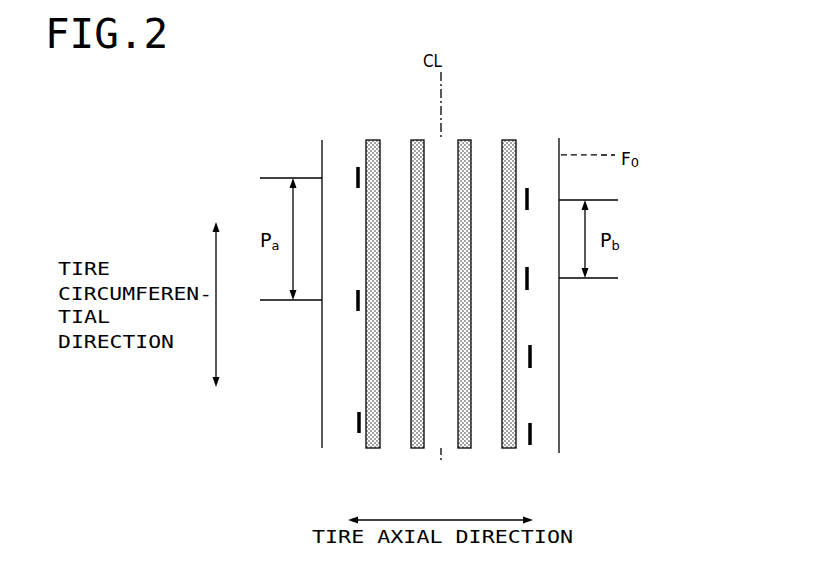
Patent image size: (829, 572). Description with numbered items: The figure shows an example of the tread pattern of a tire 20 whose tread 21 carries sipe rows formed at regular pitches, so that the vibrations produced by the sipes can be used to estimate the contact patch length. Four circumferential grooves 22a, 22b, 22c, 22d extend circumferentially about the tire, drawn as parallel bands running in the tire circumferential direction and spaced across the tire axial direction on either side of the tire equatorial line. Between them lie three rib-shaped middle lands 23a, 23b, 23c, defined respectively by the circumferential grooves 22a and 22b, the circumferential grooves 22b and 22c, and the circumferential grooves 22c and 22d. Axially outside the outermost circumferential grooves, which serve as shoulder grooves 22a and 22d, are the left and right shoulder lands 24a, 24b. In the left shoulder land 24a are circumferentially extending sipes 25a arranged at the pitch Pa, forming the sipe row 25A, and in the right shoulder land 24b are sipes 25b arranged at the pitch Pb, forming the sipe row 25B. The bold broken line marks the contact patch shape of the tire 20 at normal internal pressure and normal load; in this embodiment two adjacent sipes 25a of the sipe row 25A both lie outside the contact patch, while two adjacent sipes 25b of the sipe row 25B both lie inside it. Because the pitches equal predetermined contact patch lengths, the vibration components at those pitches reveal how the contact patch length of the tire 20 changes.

The tire 20 is at (565, 139).
The tread 21 is at (562, 330).
The circumferential groove 22a is at (372, 132).
The circumferential groove 22b is at (416, 132).
The circumferential groove 22c is at (463, 132).
The circumferential groove 22d is at (511, 132).
The middle land 23a is at (397, 438).
The middle land 23b is at (438, 438).
The middle land 23c is at (489, 438).
The left shoulder land 24a is at (340, 402).
The right shoulder land 24b is at (541, 398).
The sipe 25a is at (355, 172).
The sipe 25b is at (530, 188).
The sipe row 25A is at (358, 458).
The sipe row 25B is at (533, 458).